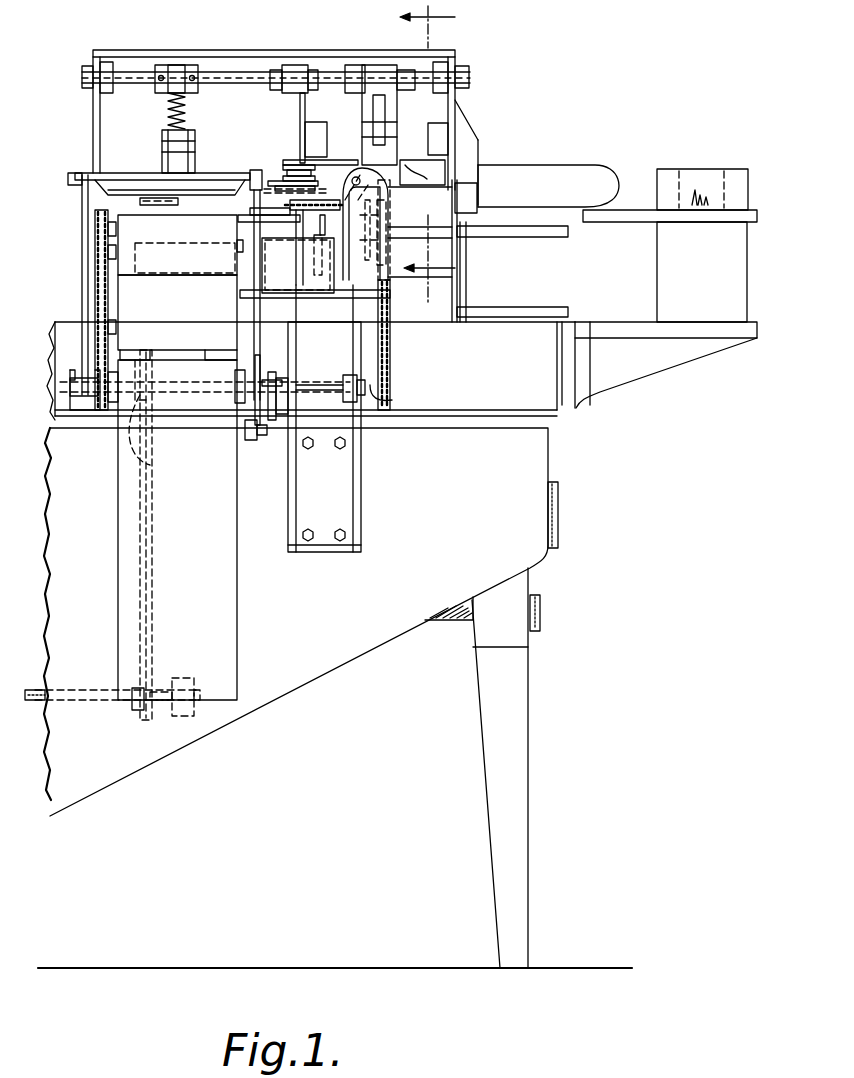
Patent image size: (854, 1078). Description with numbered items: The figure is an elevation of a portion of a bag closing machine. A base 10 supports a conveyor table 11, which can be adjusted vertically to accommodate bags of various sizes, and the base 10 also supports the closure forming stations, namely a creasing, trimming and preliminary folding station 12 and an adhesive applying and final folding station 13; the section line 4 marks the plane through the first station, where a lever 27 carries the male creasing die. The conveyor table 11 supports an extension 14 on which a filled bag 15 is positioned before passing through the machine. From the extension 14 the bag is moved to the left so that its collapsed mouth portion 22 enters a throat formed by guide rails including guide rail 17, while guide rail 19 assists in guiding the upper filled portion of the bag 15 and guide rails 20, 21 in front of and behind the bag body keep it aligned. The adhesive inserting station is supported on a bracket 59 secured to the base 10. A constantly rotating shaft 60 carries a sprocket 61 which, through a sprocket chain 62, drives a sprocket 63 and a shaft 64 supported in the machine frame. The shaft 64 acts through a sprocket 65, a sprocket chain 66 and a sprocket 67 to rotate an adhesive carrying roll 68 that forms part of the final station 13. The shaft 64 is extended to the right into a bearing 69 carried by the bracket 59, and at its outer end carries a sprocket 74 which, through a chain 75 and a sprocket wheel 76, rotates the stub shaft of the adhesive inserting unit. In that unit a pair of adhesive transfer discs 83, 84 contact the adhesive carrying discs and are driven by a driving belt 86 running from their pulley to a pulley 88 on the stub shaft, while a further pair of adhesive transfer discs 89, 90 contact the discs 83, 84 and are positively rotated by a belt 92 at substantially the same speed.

The section line 4 is at (431, 155).
The base 10 is at (548, 462).
The conveyor table 11 is at (553, 400).
The creasing, trimming and preliminary folding station 12 is at (376, 72).
The adhesive applying and final folding station 13 is at (238, 127).
The extension 14 is at (652, 358).
The filled bag 15 is at (728, 278).
The guide rail 17 is at (534, 176).
The guide rail 19 is at (620, 200).
The guide rail 20 is at (505, 235).
The guide rail 21 is at (555, 296).
The collapsed mouth portion 22 is at (738, 183).
The lever 27 is at (404, 152).
The bracket 59 is at (352, 476).
The constantly rotating shaft 60 is at (72, 686).
The sprocket 61 is at (130, 712).
The sprocket chain 62 is at (152, 543).
The sprocket 63 is at (148, 460).
The shaft 64 is at (192, 395).
The sprocket 65 is at (108, 405).
The sprocket chain 66 is at (98, 300).
The sprocket 67 is at (98, 238).
The adhesive carrying roll 68 is at (180, 287).
The bearing 69 is at (352, 374).
The sprocket 74 is at (378, 410).
The chain 75 is at (388, 350).
The sprocket wheel 76 is at (388, 230).
The adhesive transfer disc 83 is at (278, 225).
The adhesive transfer disc 84 is at (300, 228).
The driving belt 86 is at (325, 170).
The pulley 88 is at (336, 224).
The adhesive transfer disc 89 is at (255, 188).
The adhesive transfer disc 90 is at (196, 232).
The belt 92 is at (272, 182).